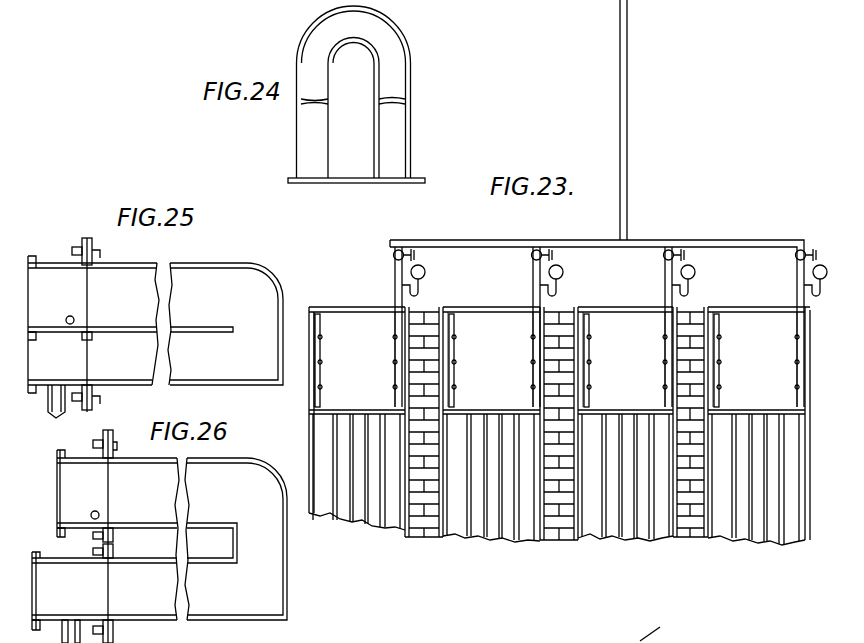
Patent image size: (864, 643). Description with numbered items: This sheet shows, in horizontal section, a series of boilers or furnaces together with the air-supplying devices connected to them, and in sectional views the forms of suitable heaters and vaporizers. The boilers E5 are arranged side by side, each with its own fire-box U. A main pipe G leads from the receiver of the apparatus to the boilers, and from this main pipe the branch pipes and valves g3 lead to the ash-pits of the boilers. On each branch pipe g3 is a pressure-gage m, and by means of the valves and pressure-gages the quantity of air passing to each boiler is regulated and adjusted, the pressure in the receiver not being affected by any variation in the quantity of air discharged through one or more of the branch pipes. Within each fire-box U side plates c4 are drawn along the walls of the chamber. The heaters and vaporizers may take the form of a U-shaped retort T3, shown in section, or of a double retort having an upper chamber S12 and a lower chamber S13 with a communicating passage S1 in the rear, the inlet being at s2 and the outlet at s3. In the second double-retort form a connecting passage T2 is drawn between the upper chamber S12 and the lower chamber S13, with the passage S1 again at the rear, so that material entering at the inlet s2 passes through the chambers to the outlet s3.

In FIG. 24, the U-shaped retort T3 is at (356, 94).
In FIG. 23, the main pipe G is at (632, 120).
In FIG. 23, the branch pipes and valves g3 is at (596, 253).
In FIG. 23, the pressure-gage m is at (622, 280).
In FIG. 23, the chamber side plates c4 is at (557, 360).
In FIG. 23, the fire-box U is at (555, 359).
In FIG. 23, the boiler E5 is at (557, 479).
In FIG. 25, the communicating passage S1 is at (225, 324).
In FIG. 26, the communicating passage S1 is at (236, 539).
In FIG. 25, the upper chamber S12 is at (93, 325).
In FIG. 26, the upper chamber S12 is at (118, 536).
In FIG. 25, the lower chamber S13 is at (90, 379).
In FIG. 26, the lower chamber S13 is at (104, 597).
In FIG. 25, the inlet s2 is at (68, 312).
In FIG. 26, the inlet s2 is at (91, 507).
In FIG. 25, the outlet s3 is at (56, 390).
In FIG. 26, the outlet s3 is at (71, 620).
In FIG. 26, the connecting passage T2 is at (147, 543).